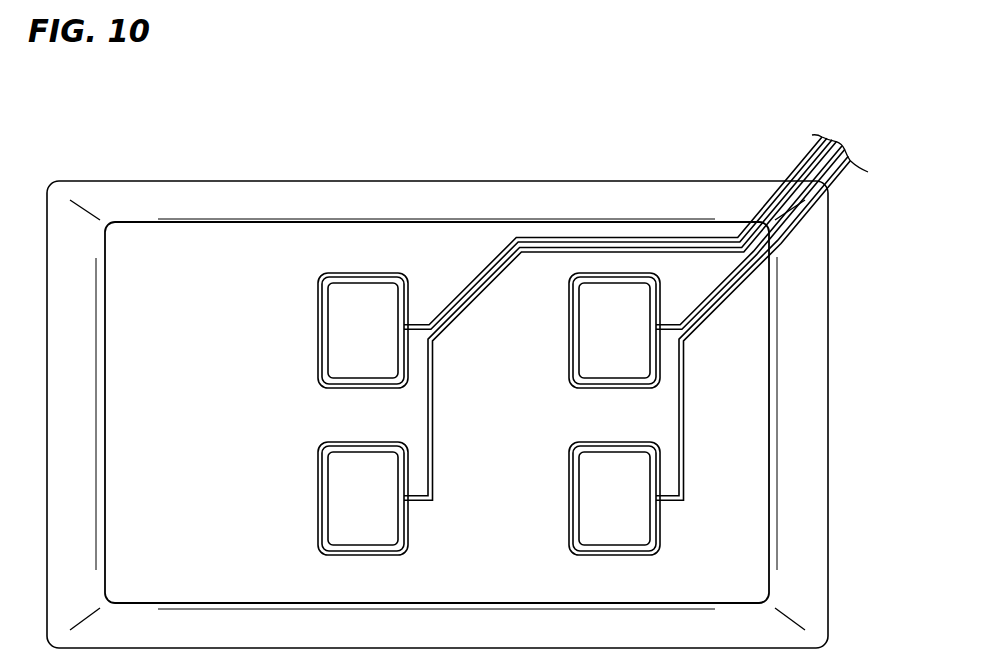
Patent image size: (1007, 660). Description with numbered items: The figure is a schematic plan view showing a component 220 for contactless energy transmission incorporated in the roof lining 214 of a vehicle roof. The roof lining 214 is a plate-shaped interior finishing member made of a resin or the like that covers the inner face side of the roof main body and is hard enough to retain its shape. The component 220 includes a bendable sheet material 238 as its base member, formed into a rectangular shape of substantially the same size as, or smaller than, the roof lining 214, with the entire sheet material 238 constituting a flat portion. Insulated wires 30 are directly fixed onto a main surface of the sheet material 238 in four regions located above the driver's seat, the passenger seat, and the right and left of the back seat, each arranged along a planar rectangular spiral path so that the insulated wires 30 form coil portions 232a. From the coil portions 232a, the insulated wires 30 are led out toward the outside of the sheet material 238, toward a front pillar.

The roof lining 214 is at (653, 176).
The component for contactless energy transmission 220 is at (342, 220).
The sheet material 238 is at (455, 236).
The coil portion 232a is at (318, 318).
The insulated wire 30 is at (486, 268).